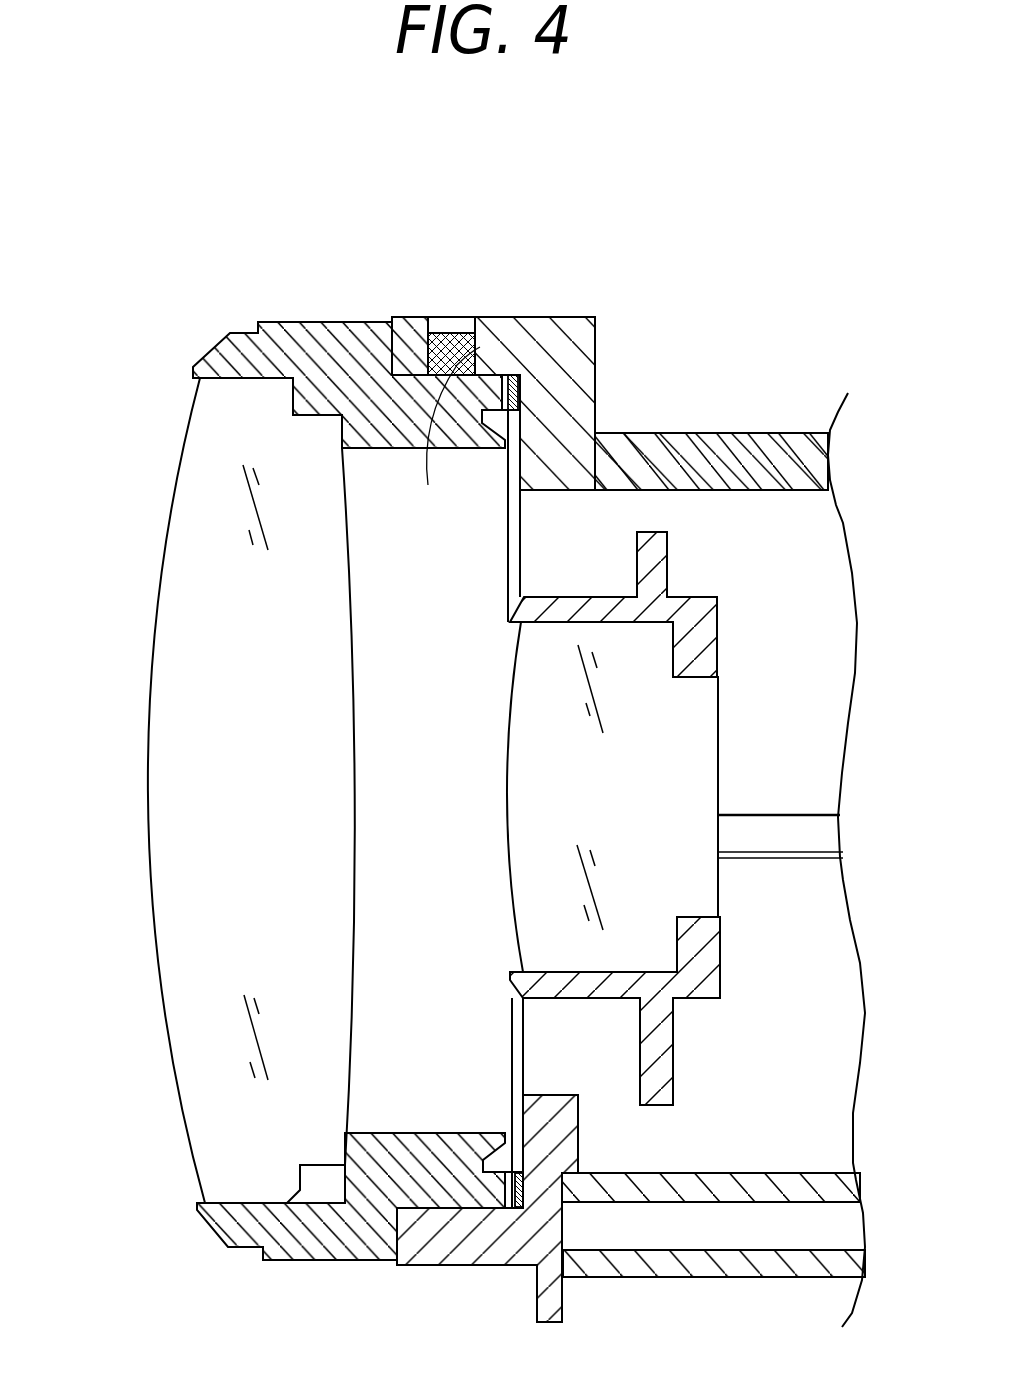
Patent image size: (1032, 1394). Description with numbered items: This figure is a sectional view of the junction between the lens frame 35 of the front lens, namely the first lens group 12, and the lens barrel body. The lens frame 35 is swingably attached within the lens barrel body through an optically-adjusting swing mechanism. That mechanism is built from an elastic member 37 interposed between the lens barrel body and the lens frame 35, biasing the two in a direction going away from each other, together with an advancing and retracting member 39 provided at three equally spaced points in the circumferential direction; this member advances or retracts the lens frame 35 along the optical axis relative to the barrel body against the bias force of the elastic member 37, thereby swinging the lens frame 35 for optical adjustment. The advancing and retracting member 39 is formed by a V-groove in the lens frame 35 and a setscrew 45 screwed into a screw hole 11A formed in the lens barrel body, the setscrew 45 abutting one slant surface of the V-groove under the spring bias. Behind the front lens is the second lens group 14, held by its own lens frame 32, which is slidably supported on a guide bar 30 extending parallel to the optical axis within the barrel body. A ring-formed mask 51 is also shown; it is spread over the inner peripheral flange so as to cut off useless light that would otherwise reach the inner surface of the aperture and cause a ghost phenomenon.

The first lens group 12 is at (178, 817).
The second lens group 14 is at (523, 785).
The guide bar 30 is at (802, 830).
The lens frame 32 is at (703, 625).
The lens frame 35 is at (352, 322).
The elastic member 37 is at (516, 362).
The advancing and retracting member 39 is at (456, 331).
The screw hole 11A is at (451, 338).
The setscrew 45 is at (445, 440).
The mask 51 is at (520, 453).